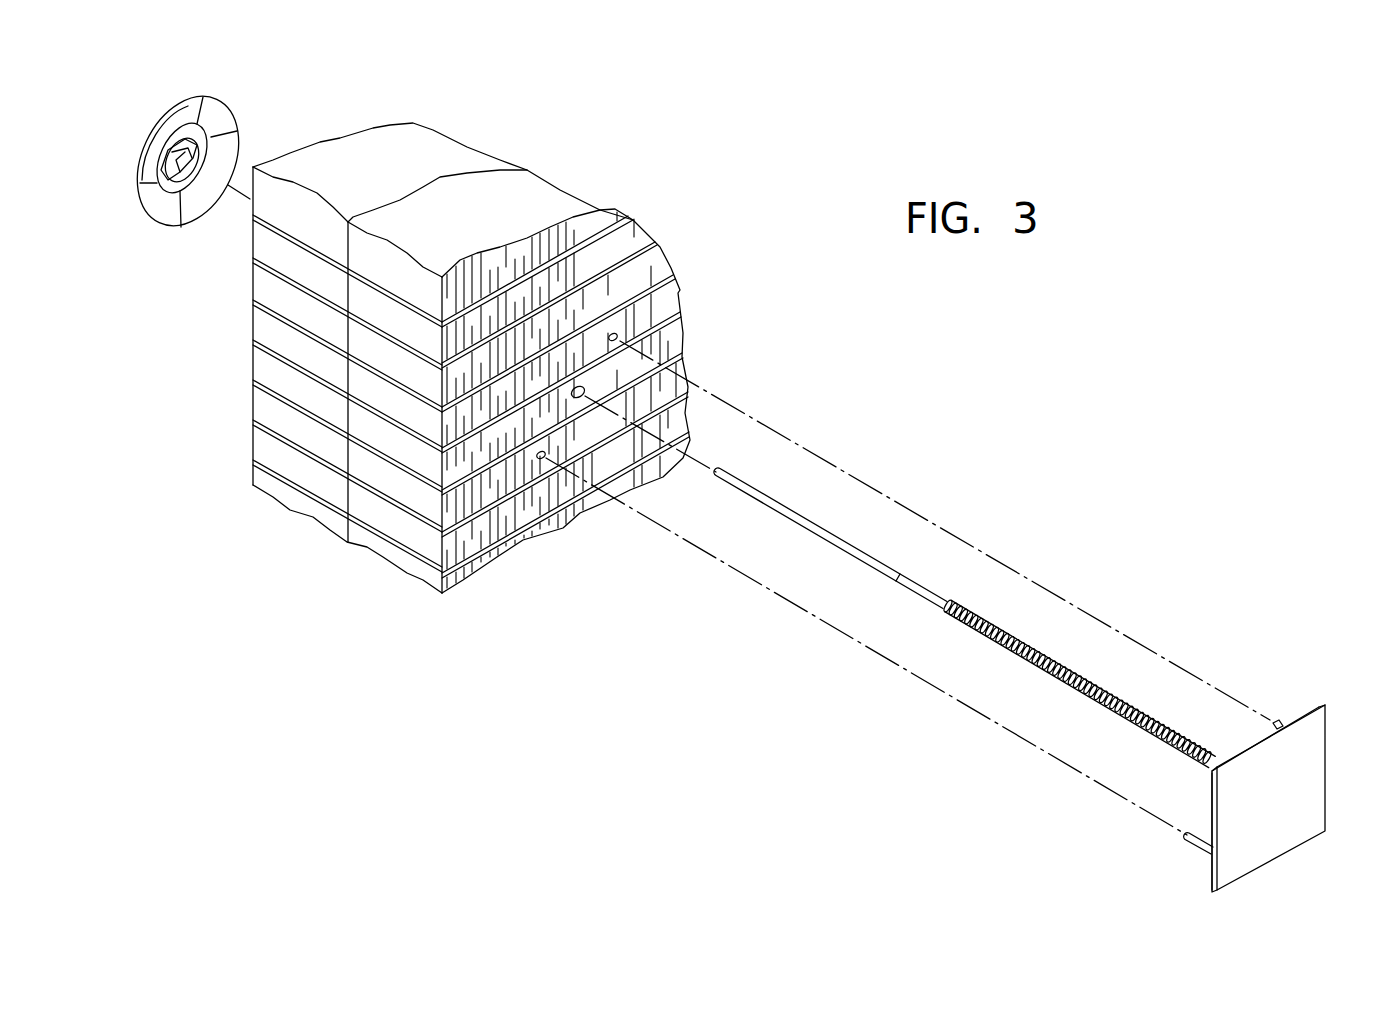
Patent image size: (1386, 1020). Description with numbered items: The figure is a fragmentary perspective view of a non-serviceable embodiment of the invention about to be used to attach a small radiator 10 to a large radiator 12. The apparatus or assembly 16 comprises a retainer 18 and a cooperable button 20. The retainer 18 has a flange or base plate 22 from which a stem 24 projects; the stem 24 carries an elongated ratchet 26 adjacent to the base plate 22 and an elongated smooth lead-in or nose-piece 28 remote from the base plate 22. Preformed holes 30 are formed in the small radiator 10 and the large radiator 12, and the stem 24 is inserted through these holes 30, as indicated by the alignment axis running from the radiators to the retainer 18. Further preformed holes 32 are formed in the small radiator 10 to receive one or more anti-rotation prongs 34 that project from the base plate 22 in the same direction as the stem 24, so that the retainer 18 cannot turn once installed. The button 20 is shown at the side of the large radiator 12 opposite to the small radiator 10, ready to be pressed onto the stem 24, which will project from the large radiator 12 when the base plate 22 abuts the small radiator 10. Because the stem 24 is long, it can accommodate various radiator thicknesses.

The small radiator 10 is at (650, 273).
The large radiator 12 is at (463, 150).
The assembly 16 is at (250, 117).
The retainer 18 is at (1199, 794).
The button 20 is at (151, 225).
The base plate 22 is at (1278, 794).
The stem 24 is at (1100, 718).
The ratchet 26 is at (1160, 723).
The nose-piece 28 is at (826, 531).
The preformed holes 30 is at (583, 391).
The preformed holes 32 is at (616, 336).
The anti-rotation prongs 34 is at (1276, 720).